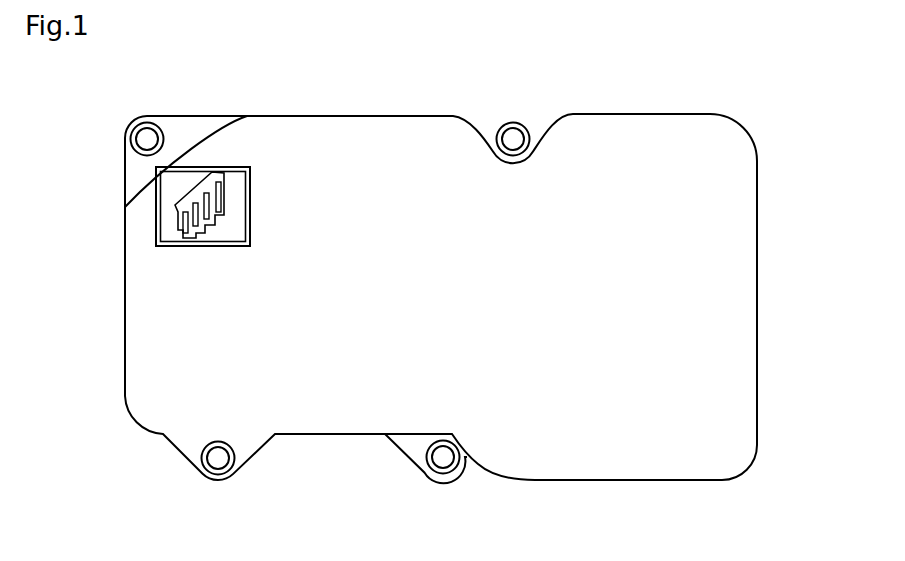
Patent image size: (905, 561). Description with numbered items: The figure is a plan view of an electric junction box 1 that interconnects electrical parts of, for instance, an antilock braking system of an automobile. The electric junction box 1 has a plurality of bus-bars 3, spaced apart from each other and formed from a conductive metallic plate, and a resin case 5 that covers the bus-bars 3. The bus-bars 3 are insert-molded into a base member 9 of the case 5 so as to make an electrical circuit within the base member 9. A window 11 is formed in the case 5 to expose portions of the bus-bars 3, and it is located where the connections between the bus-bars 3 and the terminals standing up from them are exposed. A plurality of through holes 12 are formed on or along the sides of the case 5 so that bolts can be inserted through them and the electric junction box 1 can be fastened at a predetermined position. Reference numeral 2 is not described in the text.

The electric junction box 1 is at (447, 247).
The connector 2 is at (201, 167).
The bus-bars 3 is at (180, 219).
The case 5 is at (535, 267).
The base member 9 is at (187, 374).
The window 11 is at (187, 163).
The through holes 12 is at (513, 136).